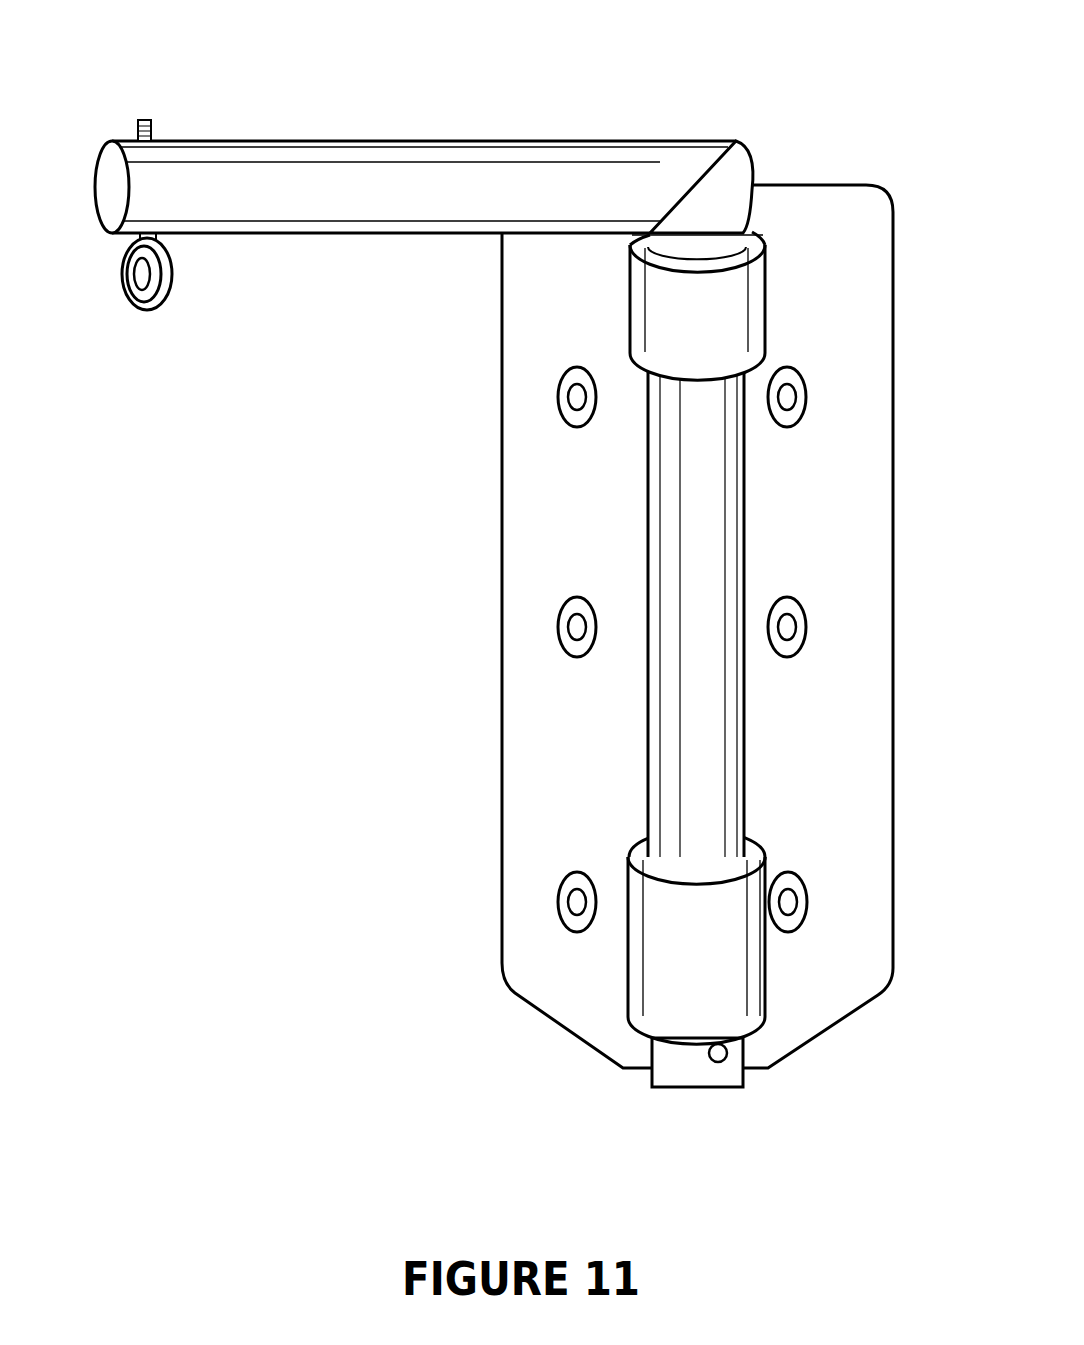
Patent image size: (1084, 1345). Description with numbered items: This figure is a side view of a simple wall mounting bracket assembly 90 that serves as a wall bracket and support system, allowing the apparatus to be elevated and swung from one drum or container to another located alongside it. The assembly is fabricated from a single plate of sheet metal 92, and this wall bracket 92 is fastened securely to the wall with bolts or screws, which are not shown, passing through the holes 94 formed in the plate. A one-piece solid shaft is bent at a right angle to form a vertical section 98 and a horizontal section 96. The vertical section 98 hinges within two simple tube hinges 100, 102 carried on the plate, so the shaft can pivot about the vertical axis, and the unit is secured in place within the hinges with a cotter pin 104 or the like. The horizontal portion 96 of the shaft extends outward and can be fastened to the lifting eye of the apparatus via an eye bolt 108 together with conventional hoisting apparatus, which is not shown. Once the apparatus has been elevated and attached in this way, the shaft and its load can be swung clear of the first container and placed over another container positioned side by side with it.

The wall mounting bracket assembly 90 is at (769, 147).
The plate of sheet metal 92 is at (511, 778).
The holes 94 is at (560, 627).
The horizontal section 96 is at (227, 195).
The vertical section 98 is at (744, 486).
The tube hinge 100 is at (652, 332).
The tube hinge 102 is at (658, 980).
The cotter pin 104 is at (727, 1050).
The eye bolt 108 is at (148, 312).